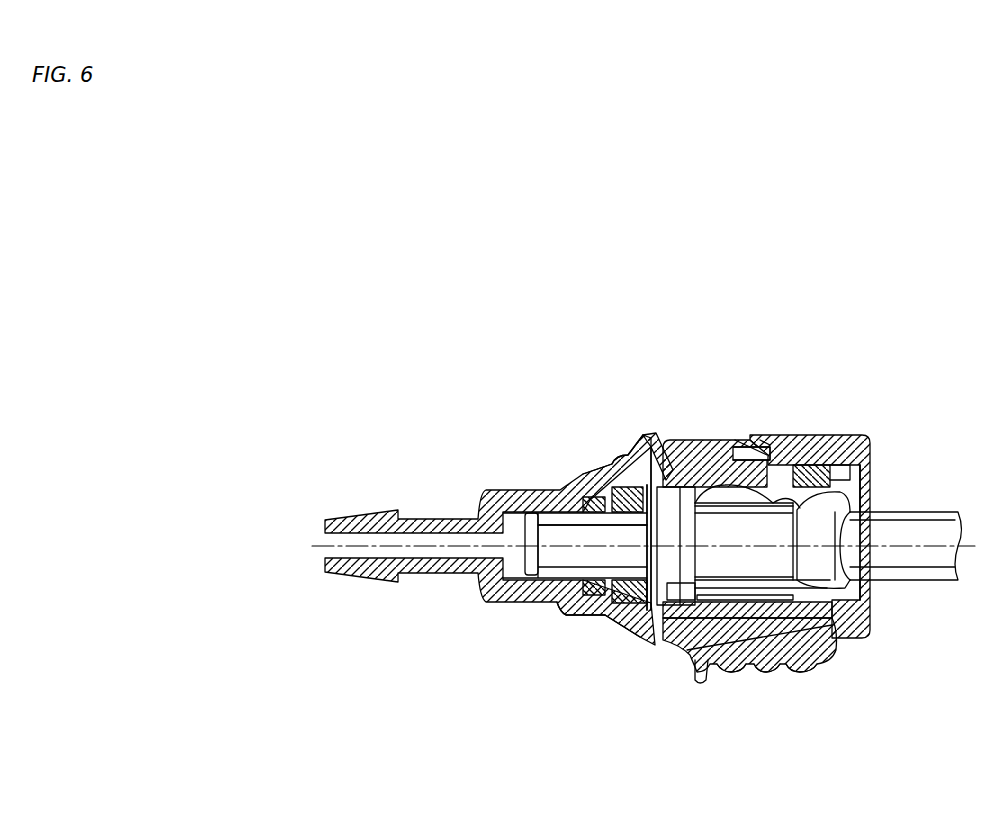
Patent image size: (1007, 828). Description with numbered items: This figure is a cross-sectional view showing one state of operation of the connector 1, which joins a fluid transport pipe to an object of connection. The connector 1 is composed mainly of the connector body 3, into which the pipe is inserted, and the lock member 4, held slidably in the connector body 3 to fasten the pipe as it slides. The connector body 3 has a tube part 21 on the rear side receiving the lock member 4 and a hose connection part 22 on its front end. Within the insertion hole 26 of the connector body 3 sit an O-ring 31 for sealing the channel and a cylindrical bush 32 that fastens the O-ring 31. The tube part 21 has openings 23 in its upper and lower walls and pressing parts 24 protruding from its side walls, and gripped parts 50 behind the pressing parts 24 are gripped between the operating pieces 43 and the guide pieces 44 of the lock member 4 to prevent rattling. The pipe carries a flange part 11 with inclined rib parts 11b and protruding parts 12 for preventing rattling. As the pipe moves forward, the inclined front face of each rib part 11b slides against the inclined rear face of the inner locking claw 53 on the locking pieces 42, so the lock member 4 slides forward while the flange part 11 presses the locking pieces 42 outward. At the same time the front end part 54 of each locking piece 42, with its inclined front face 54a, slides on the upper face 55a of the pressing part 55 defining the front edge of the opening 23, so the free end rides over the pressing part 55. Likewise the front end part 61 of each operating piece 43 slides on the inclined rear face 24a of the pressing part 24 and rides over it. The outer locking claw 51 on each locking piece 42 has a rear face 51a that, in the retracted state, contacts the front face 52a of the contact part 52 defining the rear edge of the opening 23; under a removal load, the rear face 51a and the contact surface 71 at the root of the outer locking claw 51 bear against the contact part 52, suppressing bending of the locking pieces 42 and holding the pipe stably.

The connector for pipe connection 1 is at (725, 320).
The connector body 3 is at (514, 501).
The lock member 4 is at (873, 613).
The flange part 11 is at (651, 612).
The rib part 11b is at (670, 586).
The protruding part 12 is at (870, 580).
The tube part 21 is at (868, 432).
The hose connection part 22 is at (365, 519).
The opening 23 is at (710, 438).
The pressing part 24 is at (688, 655).
The rear face of pressing part 24a is at (724, 672).
The insertion hole 26 is at (513, 515).
The O-ring 31 is at (571, 614).
The bush 32 is at (607, 628).
The locking piece 42 is at (795, 515).
The operating piece 43 is at (768, 672).
The guide piece 44 is at (710, 672).
The gripped part 50 is at (783, 666).
The outer locking claw 51 is at (735, 440).
The rear face of outer locking claw 51a is at (765, 440).
The contact part 52 is at (842, 437).
The front face of contact part 52a is at (790, 440).
The inner locking claw 53 is at (773, 497).
The front end part 54 is at (690, 440).
The front face of front end part 54a is at (647, 510).
The pressing part 55 is at (613, 463).
The upper face of pressing part 55a is at (658, 423).
The front end part of operating piece 61 is at (692, 680).
The contact surface 71 is at (770, 447).